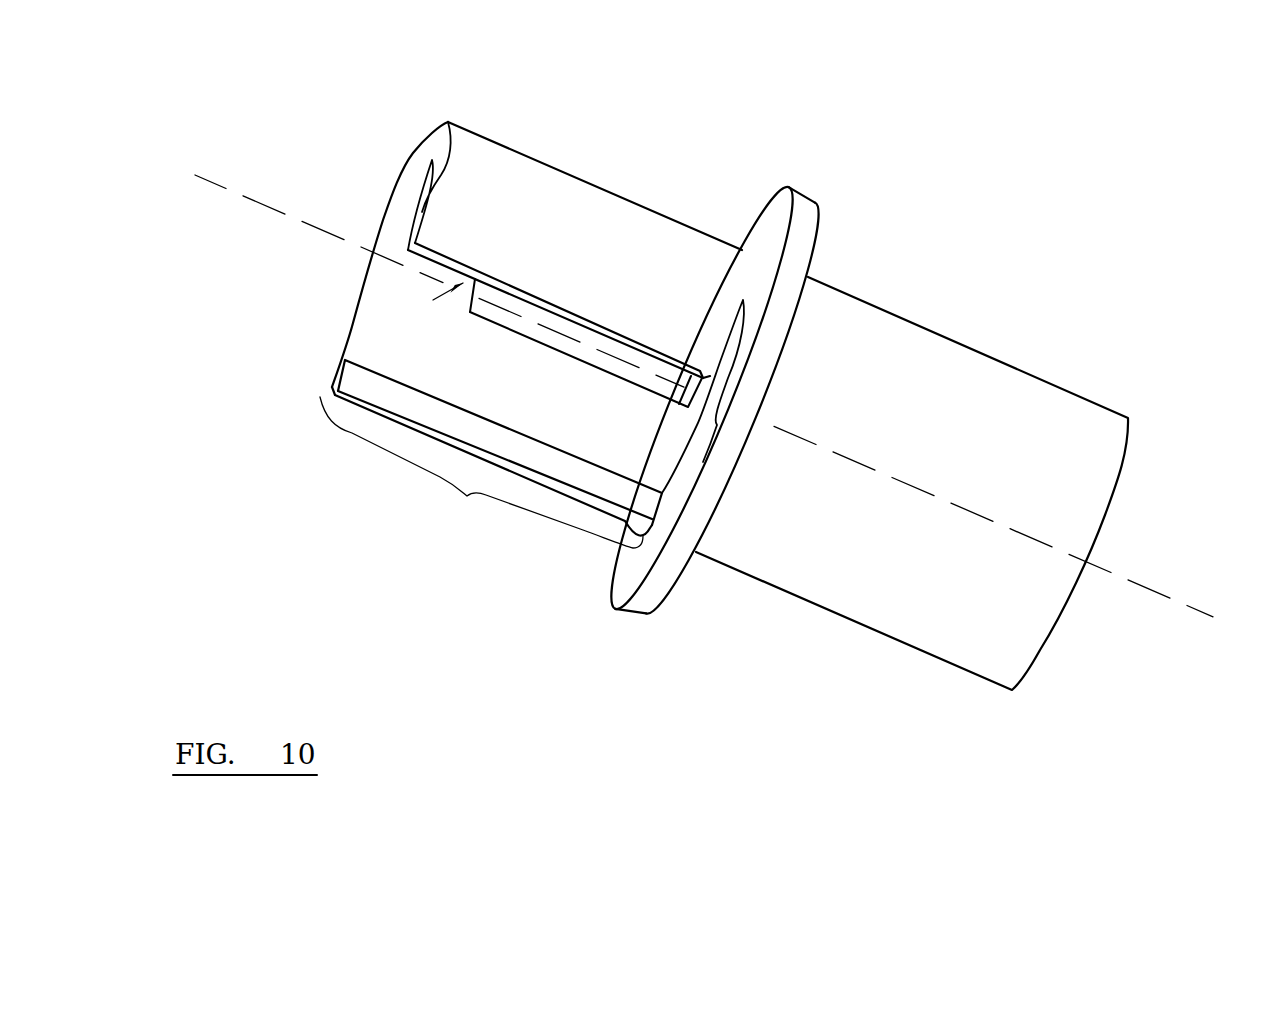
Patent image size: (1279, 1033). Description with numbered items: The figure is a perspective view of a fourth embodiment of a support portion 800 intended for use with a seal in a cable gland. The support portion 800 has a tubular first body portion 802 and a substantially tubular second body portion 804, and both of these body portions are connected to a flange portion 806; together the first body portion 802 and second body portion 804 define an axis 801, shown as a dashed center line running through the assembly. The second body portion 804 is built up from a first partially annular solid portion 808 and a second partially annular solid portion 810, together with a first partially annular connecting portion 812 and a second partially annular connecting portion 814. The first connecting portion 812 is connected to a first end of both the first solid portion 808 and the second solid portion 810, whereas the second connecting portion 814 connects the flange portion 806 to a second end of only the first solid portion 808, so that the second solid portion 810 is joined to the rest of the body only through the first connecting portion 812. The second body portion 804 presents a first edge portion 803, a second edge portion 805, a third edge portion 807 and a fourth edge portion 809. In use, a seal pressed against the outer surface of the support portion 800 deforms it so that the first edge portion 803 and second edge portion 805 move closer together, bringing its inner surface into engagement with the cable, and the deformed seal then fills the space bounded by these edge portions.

The support portion 800 is at (954, 271).
The axis 801 is at (727, 404).
The tubular first body portion 802 is at (1032, 431).
The first edge portion 803 is at (405, 407).
The substantially tubular second body portion 804 is at (470, 495).
The second edge portion 805 is at (433, 300).
The flange portion 806 is at (803, 248).
The third edge portion 807 is at (598, 357).
The first partially annular solid portion 808 is at (463, 365).
The fourth edge portion 809 is at (485, 309).
The second partially annular solid portion 810 is at (558, 230).
The first partially annular connecting portion 812 is at (417, 263).
The second partially annular connecting portion 814 is at (672, 442).